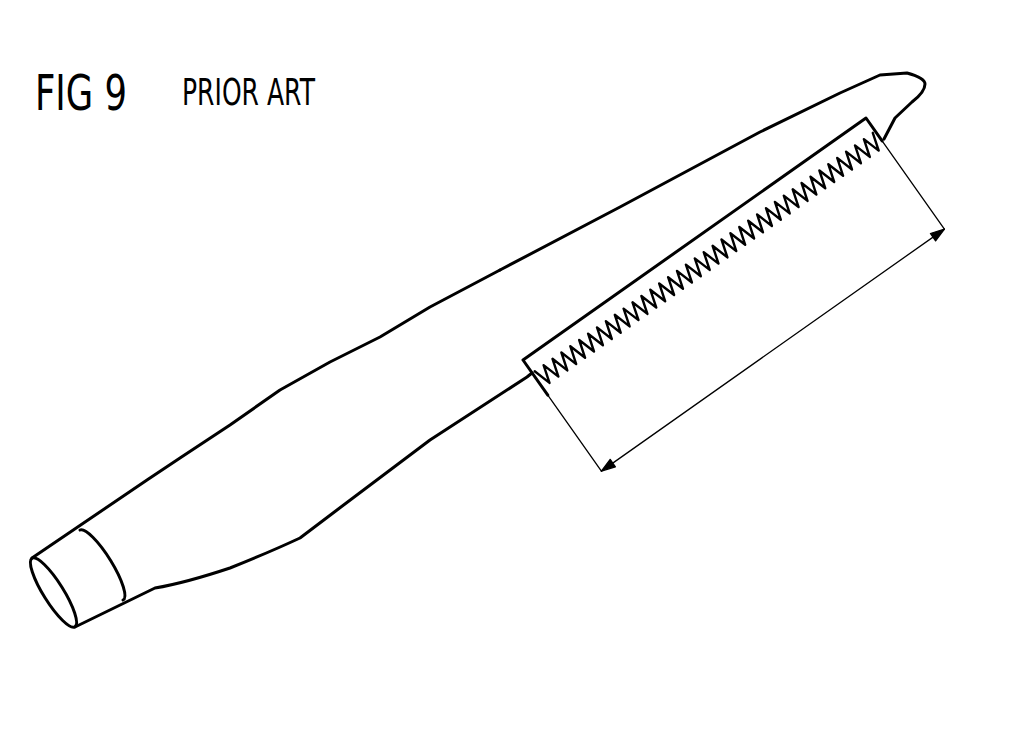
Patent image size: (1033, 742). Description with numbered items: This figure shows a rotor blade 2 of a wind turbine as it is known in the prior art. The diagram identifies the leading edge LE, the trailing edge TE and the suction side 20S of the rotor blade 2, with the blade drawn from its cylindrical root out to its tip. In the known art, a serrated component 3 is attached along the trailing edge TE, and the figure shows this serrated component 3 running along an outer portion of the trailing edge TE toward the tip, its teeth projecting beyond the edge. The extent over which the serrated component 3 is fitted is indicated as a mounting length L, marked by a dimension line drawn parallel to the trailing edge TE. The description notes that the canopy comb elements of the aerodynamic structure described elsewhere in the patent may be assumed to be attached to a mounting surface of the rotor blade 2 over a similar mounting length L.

The rotor blade 2 is at (474, 352).
The suction side 20S is at (570, 252).
The leading edge LE is at (432, 305).
The trailing edge TE is at (433, 440).
The serrated component 3 is at (758, 267).
The mounting length L is at (780, 350).